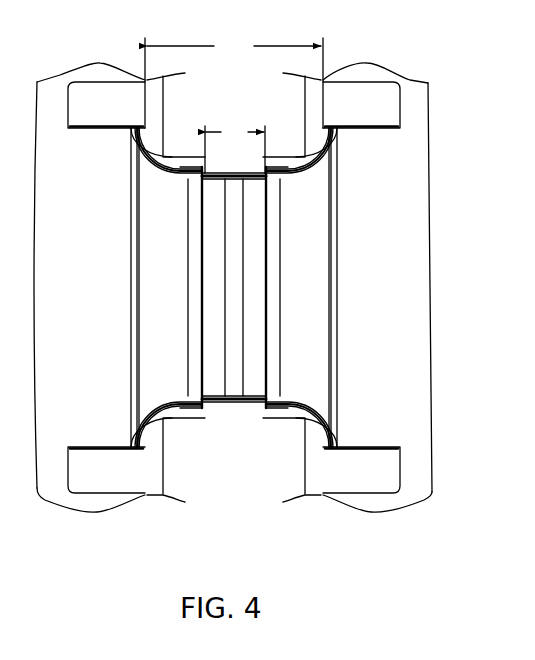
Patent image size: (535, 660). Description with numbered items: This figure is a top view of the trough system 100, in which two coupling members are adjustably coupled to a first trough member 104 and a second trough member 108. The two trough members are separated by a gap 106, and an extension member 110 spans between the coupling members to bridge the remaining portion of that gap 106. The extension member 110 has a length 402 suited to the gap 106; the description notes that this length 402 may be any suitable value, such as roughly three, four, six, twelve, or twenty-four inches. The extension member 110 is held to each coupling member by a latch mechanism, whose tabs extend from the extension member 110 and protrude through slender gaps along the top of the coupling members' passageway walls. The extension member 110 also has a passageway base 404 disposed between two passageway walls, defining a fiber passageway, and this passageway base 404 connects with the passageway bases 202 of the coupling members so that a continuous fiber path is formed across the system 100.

The trough system 100 is at (80, 17).
The first trough member 104 is at (168, 498).
The gap 106 is at (234, 83).
The second trough member 108 is at (302, 498).
The extension member 110 is at (268, 271).
The passageway base 202 is at (152, 283).
The length 402 is at (235, 149).
The passageway base 404 is at (216, 283).